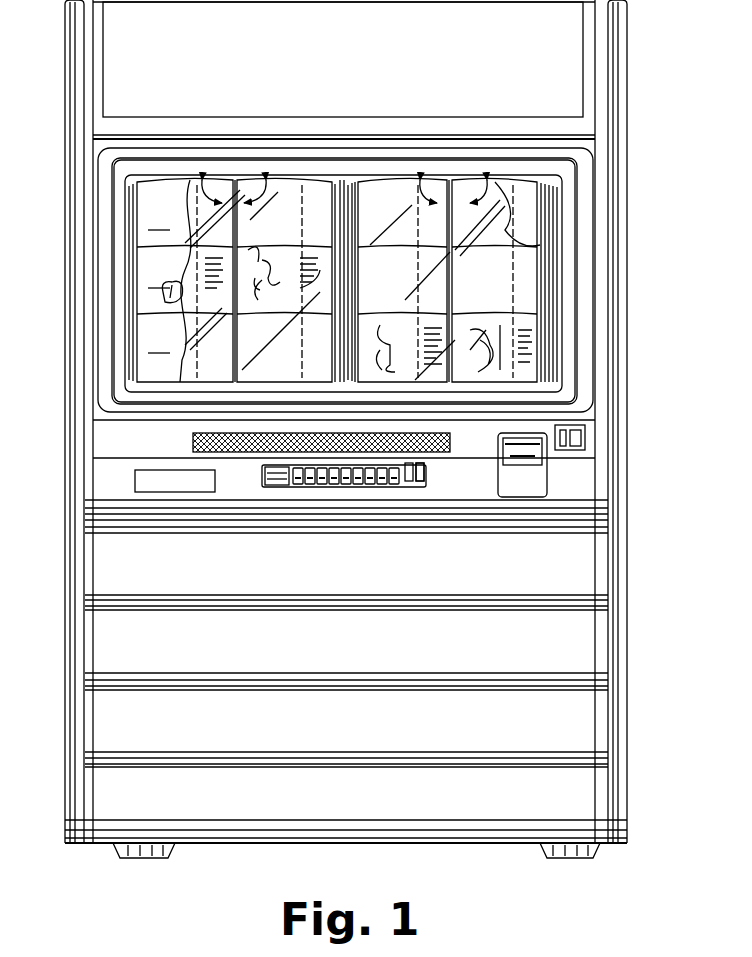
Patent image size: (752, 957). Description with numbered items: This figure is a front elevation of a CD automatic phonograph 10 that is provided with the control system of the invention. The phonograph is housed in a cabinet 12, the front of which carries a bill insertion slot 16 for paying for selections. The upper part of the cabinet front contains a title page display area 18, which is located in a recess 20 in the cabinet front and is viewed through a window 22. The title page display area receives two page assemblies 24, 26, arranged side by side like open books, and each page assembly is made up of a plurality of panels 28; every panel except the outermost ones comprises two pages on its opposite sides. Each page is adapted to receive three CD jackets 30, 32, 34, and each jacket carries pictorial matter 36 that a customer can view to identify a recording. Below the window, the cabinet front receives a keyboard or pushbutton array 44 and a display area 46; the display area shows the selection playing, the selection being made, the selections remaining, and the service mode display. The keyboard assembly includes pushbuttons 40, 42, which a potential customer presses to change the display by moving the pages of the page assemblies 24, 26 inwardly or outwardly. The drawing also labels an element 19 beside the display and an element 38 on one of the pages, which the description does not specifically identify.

The automatic phonograph 10 is at (630, 58).
The cabinet 12 is at (630, 586).
The bill insertion slot 16 is at (522, 465).
The title page display area 18 is at (347, 173).
The power switch 19 is at (562, 450).
The recess 20 is at (555, 230).
The window 22 is at (202, 373).
The page assembly 24 is at (222, 173).
The page assembly 26 is at (430, 173).
The panel 28 is at (137, 195).
The CD jacket 30 is at (162, 219).
The CD jacket 32 is at (162, 277).
The CD jacket 34 is at (162, 342).
The pictorial matter 36 is at (258, 258).
The image on page 38 is at (318, 278).
The pushbutton 40 is at (408, 483).
The pushbutton 42 is at (422, 480).
The keyboard or pushbutton array 44 is at (358, 490).
The display area 46 is at (176, 494).